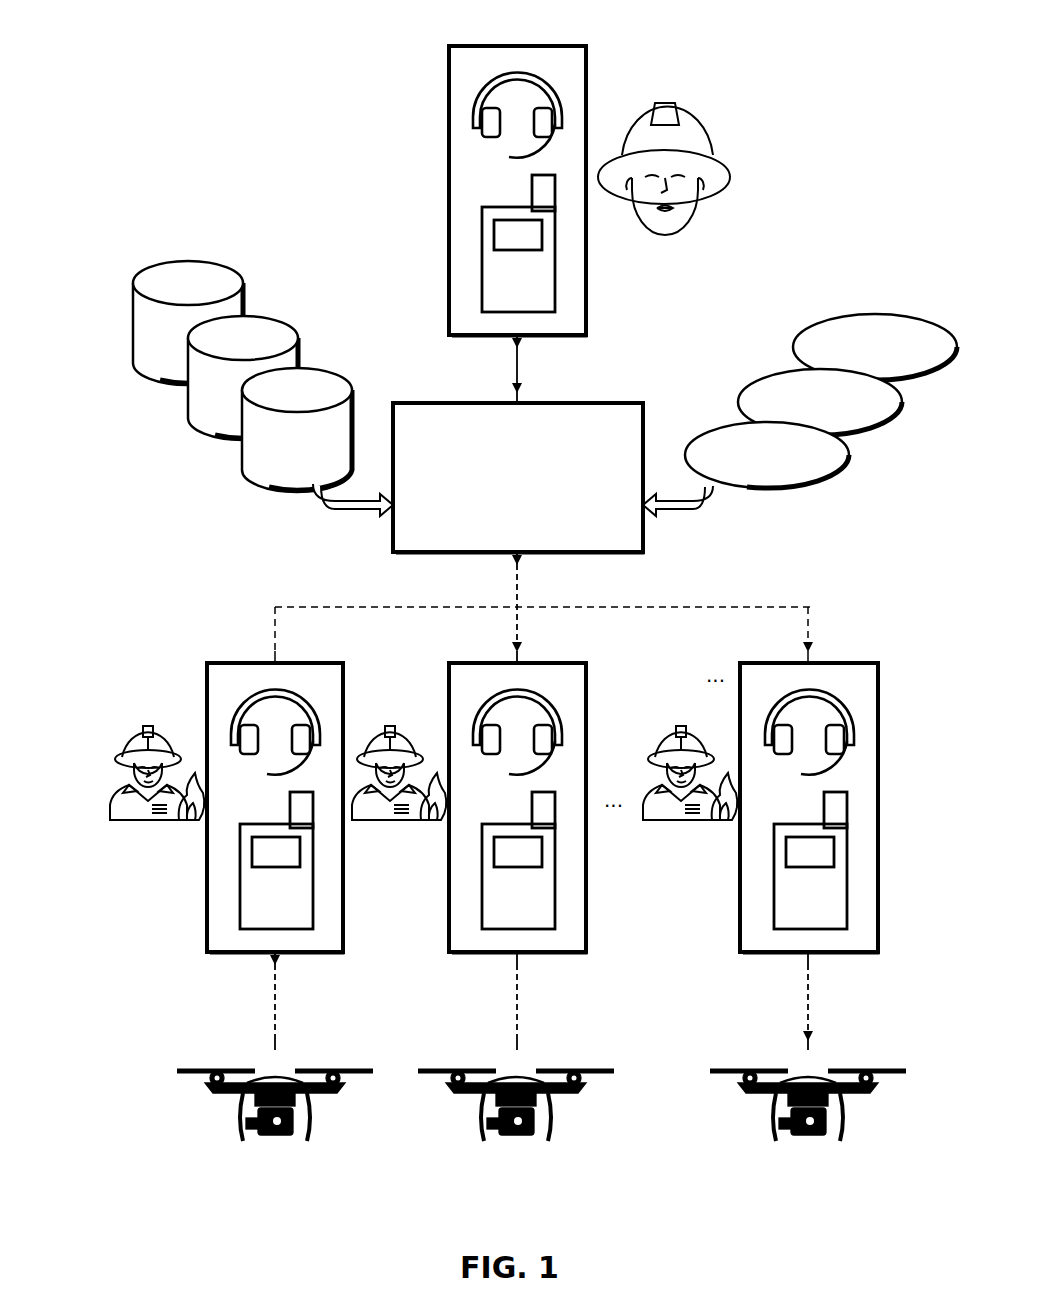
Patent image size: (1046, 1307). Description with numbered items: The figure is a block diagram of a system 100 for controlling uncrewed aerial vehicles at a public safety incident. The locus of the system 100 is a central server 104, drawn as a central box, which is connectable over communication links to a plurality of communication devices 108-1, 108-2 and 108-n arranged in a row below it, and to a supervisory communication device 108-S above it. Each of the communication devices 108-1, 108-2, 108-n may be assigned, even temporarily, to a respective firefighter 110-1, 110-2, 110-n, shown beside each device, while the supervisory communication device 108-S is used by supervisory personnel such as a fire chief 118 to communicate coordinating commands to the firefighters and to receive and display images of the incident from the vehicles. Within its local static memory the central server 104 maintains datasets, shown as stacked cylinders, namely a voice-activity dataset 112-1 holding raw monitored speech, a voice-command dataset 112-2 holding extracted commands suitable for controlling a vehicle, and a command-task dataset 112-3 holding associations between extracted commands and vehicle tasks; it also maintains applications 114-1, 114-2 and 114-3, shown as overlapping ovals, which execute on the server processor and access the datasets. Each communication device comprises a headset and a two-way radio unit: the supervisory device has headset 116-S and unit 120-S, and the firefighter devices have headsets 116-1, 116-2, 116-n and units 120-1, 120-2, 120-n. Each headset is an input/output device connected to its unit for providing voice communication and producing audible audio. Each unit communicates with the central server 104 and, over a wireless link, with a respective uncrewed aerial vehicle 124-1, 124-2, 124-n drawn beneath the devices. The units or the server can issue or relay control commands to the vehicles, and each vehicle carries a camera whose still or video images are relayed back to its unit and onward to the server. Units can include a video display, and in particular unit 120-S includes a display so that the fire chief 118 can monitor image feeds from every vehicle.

The system 100 is at (826, 131).
The central server 104 is at (477, 420).
The supervisory communication device 108-S is at (505, 45).
The communication device 108-1 is at (240, 662).
The communication device 108-2 is at (482, 662).
The communication device 108-n is at (774, 662).
The firefighter 110-1 is at (148, 822).
The firefighter 110-2 is at (390, 822).
The firefighter 110-n is at (681, 822).
The voice-activity dataset 112-1 is at (240, 447).
The voice-command dataset 112-2 is at (186, 396).
The command-task dataset 112-3 is at (132, 317).
The application 114-1 is at (728, 426).
The application 114-2 is at (781, 371).
The application 114-3 is at (836, 316).
The headset 116-S is at (500, 158).
The headset 116-1 is at (232, 745).
The headset 116-2 is at (474, 745).
The headset 116-n is at (845, 750).
The fire chief 118 is at (730, 178).
The two-way radio unit 120-S is at (510, 268).
The two-way radio unit 120-1 is at (270, 912).
The two-way radio unit 120-2 is at (512, 912).
The two-way radio unit 120-n is at (805, 912).
The uncrewed aerial vehicle 124-1 is at (276, 1140).
The uncrewed aerial vehicle 124-2 is at (517, 1140).
The uncrewed aerial vehicle 124-n is at (809, 1140).